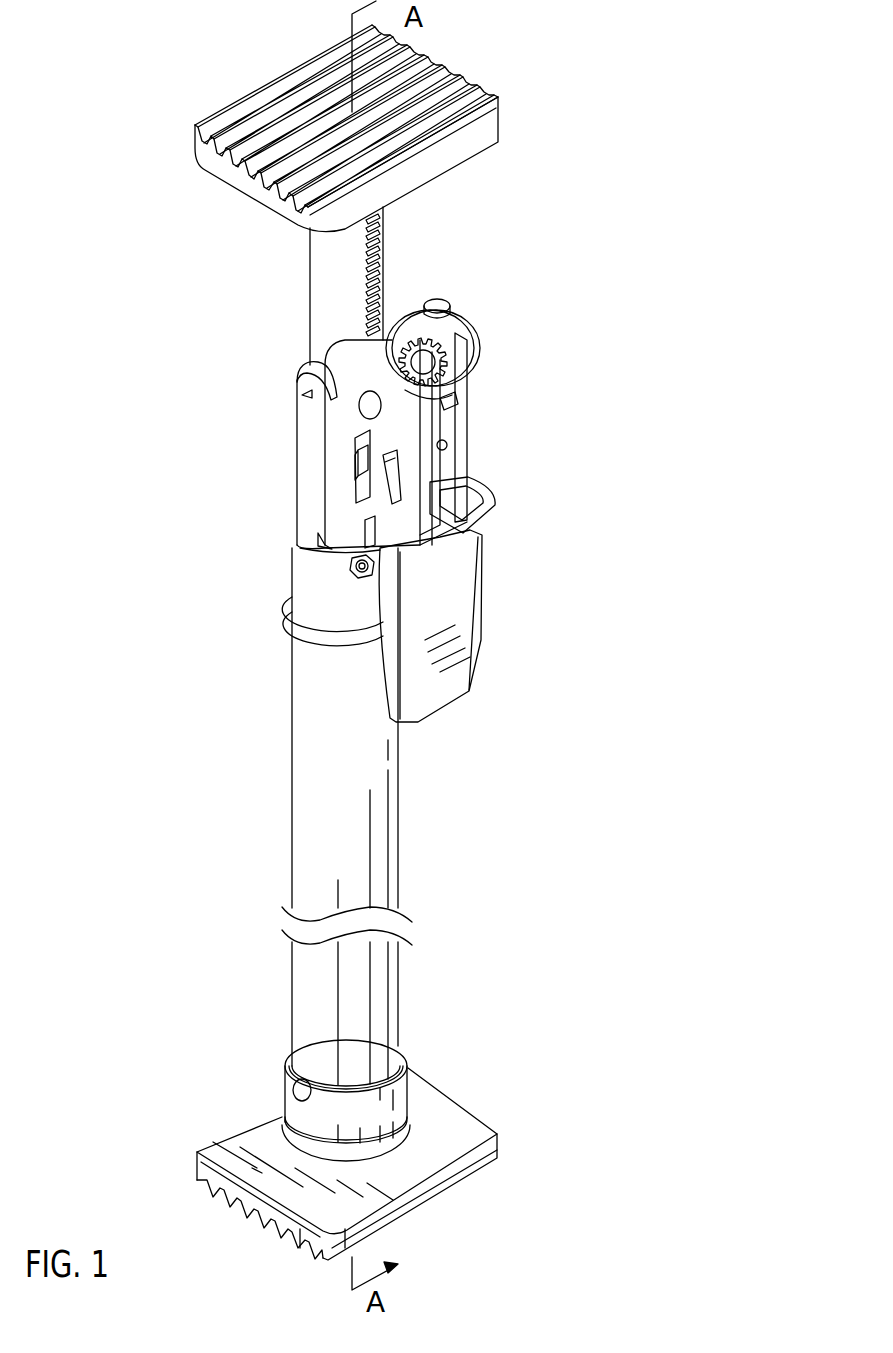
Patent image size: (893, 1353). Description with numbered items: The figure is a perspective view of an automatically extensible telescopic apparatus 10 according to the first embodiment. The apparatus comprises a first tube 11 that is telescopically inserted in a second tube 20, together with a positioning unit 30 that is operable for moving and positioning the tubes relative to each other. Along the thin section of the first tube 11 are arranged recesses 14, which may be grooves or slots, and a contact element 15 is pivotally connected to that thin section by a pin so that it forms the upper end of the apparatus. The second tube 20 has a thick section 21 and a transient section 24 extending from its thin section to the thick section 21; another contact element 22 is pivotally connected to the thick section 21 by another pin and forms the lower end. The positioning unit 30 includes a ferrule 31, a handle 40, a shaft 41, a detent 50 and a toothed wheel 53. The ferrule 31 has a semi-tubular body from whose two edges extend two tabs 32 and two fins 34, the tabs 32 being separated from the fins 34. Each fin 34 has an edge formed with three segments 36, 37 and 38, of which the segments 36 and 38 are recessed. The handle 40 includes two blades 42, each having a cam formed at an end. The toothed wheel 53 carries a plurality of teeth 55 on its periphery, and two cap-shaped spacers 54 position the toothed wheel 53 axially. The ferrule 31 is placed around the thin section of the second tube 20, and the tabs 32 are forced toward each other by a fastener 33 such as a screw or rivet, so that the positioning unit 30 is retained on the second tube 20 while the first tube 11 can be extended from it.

The automatically extensible telescopic apparatus 10 is at (153, 1183).
The first tube 11 is at (325, 272).
The recesses 14 is at (373, 230).
The contact element 15 is at (408, 175).
The second tube 20 is at (330, 764).
The thick section 21 is at (365, 1075).
The contact element 22 is at (447, 1132).
The transient section 24 is at (312, 576).
The positioning unit 30 is at (512, 558).
The ferrule 31 is at (308, 480).
The tabs 32 is at (345, 566).
The fastener 33 is at (395, 552).
The fins 34 is at (346, 436).
The segment 36 is at (438, 470).
The segment 37 is at (447, 444).
The segment 38 is at (400, 340).
The handle 40 is at (450, 673).
The shaft 41 is at (370, 405).
The blades 42 is at (440, 372).
The detent 50 is at (352, 490).
The toothed wheel 53 is at (468, 348).
The spacers 54 is at (425, 342).
The teeth 55 is at (453, 396).